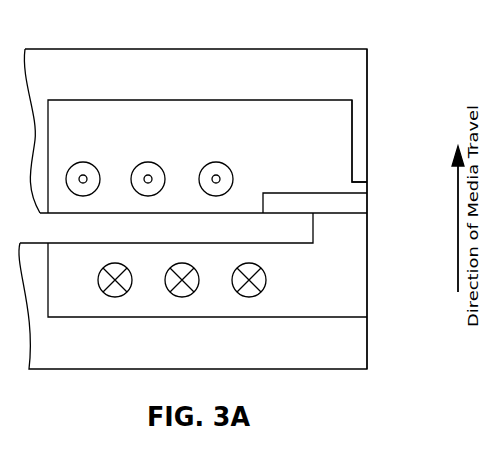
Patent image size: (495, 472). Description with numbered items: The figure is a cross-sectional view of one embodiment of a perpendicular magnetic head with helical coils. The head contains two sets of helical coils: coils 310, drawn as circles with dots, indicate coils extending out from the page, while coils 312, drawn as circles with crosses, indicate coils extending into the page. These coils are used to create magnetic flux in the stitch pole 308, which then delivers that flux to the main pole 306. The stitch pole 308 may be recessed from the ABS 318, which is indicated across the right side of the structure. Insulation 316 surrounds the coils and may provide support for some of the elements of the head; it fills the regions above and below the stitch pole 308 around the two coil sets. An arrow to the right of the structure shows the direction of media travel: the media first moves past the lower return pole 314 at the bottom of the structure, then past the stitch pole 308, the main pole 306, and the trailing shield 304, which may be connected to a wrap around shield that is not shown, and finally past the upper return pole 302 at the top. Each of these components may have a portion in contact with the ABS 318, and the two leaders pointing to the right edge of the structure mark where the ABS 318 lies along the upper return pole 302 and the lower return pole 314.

The upper return pole 302 is at (195, 131).
The trailing shield 304 is at (367, 145).
The main pole 306 is at (367, 193).
The stitch pole 308 is at (193, 228).
The helical coils 310 is at (83, 162).
The helical coils 312 is at (98, 284).
The lower return pole 314 is at (193, 291).
The insulation 316 is at (207, 208).
The ABS 318 is at (367, 68).